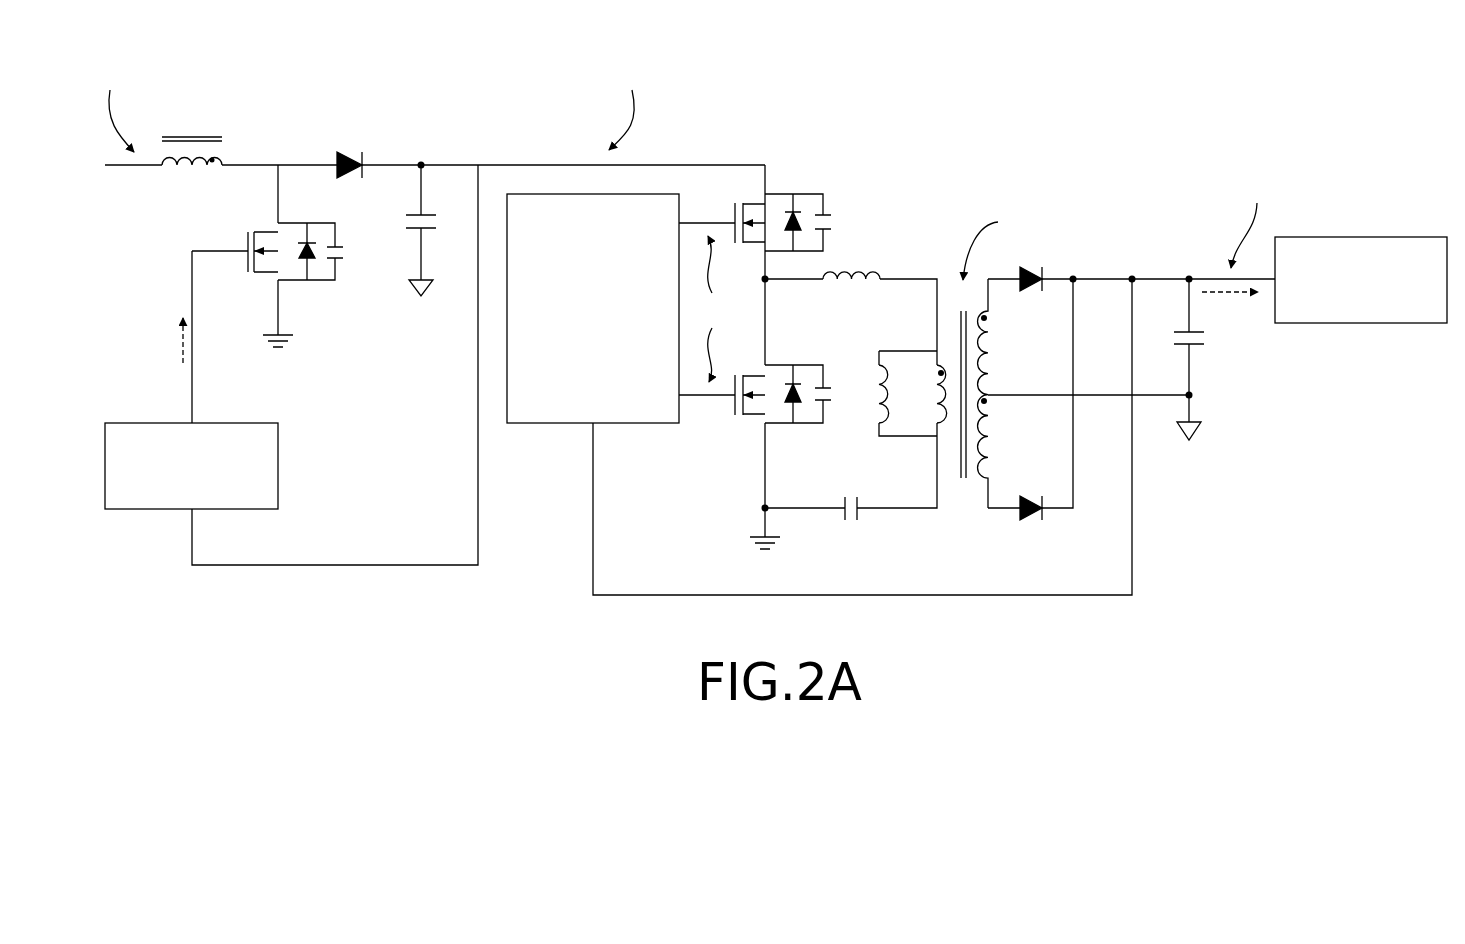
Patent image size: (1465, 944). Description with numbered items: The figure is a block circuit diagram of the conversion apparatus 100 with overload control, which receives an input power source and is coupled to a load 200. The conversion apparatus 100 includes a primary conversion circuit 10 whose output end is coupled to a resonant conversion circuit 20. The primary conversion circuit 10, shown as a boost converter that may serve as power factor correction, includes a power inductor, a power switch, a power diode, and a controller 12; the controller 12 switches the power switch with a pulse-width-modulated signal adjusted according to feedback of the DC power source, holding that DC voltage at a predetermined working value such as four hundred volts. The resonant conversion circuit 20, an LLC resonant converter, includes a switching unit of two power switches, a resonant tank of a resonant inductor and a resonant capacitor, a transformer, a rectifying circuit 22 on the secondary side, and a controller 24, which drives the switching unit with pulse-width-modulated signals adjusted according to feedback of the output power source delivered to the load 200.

The conversion apparatus 100 is at (797, 50).
The primary conversion circuit 10 is at (301, 120).
The controller 12 is at (203, 428).
The resonant conversion circuit 20 is at (977, 190).
The rectifying circuit 22 is at (1052, 450).
The controller 24 is at (582, 416).
The load 200 is at (1362, 243).